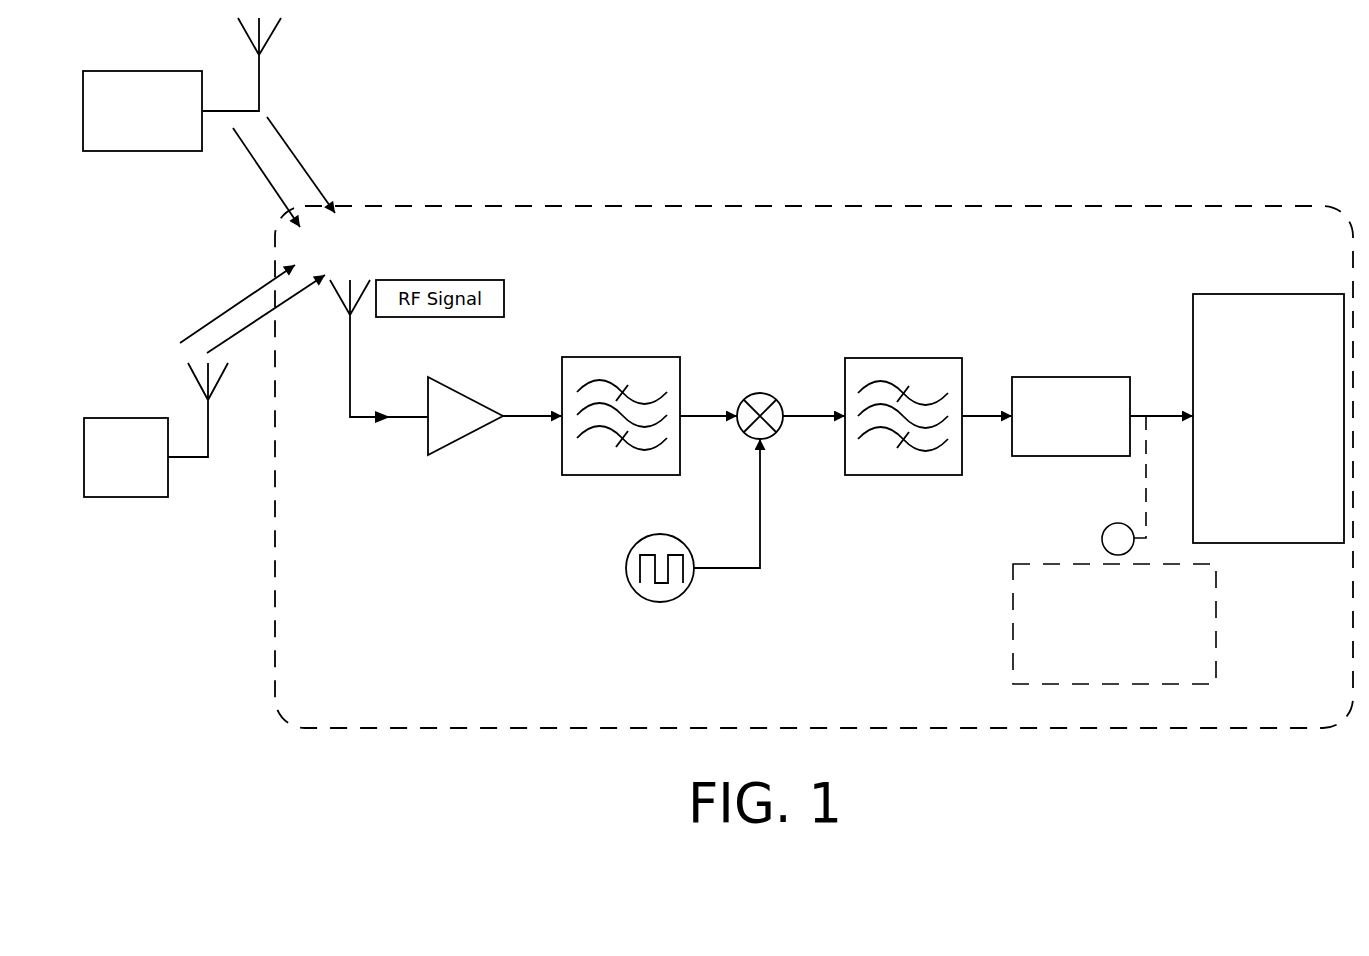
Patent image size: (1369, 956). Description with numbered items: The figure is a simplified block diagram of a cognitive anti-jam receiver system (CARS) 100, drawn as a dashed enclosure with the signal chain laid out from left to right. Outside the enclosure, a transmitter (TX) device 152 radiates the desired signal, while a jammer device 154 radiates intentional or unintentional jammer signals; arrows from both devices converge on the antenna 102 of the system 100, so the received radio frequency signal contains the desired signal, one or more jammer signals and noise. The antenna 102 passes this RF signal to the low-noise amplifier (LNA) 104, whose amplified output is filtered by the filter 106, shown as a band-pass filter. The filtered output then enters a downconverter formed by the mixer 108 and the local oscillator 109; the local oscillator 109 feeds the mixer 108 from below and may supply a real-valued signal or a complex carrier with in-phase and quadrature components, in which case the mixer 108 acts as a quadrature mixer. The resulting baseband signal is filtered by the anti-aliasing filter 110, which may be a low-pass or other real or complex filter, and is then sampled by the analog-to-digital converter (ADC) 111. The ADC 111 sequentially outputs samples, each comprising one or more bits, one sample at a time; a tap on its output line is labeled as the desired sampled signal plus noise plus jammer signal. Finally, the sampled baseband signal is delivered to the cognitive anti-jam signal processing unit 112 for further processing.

The cognitive anti-jam receiver system (CARS) 100 is at (697, 206).
The antenna 102 is at (370, 277).
The low-noise amplifier (LNA) 104 is at (477, 426).
The filter 106 is at (636, 351).
The mixer 108 is at (776, 382).
The local oscillator 109 is at (658, 553).
The anti-aliasing filter 110 is at (923, 343).
The analog-to-digital converter (ADC) 111 is at (1090, 442).
The cognitive anti-jam signal processing unit 112 is at (1288, 501).
The transmitter (TX) device 152 is at (145, 483).
The jammer device 154 is at (161, 136).